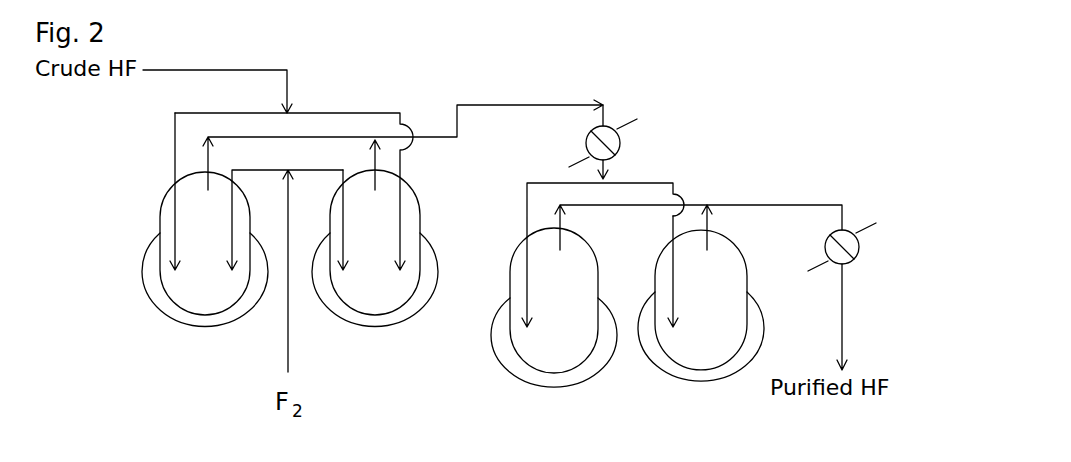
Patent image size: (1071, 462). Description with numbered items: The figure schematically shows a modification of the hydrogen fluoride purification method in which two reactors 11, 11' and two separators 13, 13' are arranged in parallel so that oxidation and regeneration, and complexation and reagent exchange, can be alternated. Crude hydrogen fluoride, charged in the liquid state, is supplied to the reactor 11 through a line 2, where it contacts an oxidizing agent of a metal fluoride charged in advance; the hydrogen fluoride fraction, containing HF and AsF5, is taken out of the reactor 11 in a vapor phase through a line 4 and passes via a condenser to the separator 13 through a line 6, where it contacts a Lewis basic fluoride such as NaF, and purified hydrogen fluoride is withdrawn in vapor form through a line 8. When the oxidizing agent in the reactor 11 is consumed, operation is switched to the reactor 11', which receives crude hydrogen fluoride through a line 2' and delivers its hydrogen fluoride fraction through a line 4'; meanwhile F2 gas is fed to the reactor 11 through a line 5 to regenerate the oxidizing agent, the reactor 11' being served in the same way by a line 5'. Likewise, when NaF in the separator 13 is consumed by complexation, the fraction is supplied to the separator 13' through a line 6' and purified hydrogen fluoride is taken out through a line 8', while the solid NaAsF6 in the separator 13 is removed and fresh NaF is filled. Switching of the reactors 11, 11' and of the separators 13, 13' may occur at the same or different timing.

The line 2 is at (182, 231).
The line 2' is at (399, 239).
The line 4 is at (420, 145).
The line 4' is at (345, 165).
The line 5 is at (285, 271).
The line 5' is at (321, 220).
The reactor 11 is at (196, 298).
The reactor 11' is at (373, 298).
The line 6 is at (574, 255).
The line 6' is at (643, 271).
The line 8 is at (715, 287).
The line 8' is at (738, 227).
The separator 13 is at (550, 360).
The separator 13' is at (694, 357).